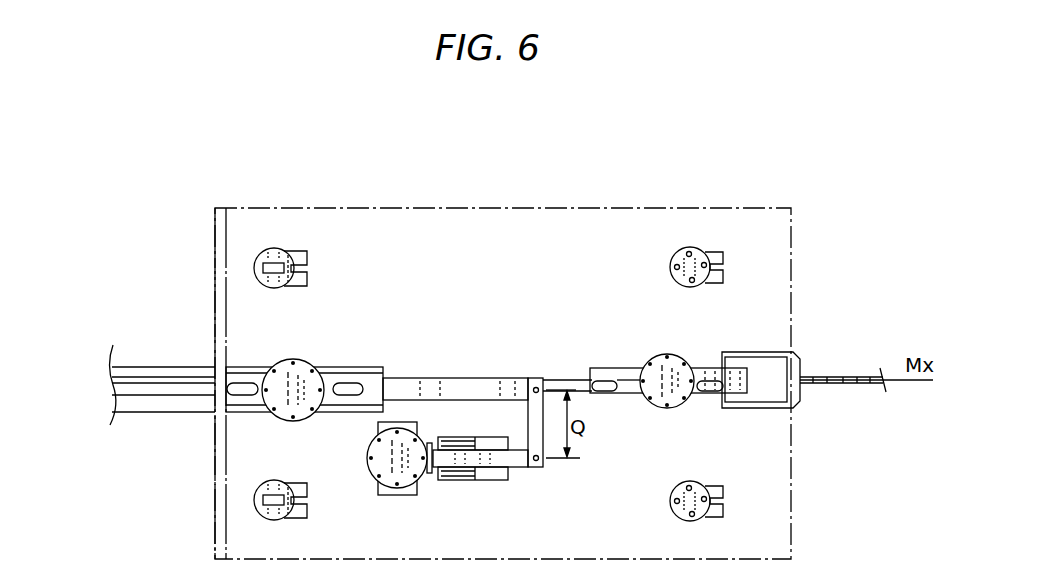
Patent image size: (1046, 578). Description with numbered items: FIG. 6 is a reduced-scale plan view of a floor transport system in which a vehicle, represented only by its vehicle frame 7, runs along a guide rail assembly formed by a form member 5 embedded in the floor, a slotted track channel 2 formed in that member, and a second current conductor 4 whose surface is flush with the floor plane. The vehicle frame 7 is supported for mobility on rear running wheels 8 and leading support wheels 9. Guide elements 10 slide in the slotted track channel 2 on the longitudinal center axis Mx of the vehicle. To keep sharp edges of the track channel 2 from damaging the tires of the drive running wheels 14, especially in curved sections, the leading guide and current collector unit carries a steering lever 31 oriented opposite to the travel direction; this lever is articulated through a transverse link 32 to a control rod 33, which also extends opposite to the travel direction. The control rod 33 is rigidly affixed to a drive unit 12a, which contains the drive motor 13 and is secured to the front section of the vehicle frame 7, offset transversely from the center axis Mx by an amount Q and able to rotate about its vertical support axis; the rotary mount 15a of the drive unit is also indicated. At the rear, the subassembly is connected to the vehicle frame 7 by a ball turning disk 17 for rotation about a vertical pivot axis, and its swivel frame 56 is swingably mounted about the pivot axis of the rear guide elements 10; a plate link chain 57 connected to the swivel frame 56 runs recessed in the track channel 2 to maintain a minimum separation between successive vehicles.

The vehicle frame 7 is at (566, 204).
The leading support wheels 9 is at (308, 259).
The rear running wheels 8 is at (725, 278).
The second current conductor 4 is at (113, 382).
The slotted track channel 2 is at (320, 396).
The form member 5 is at (176, 406).
The guide elements 10 is at (238, 388).
The drive unit 12a is at (362, 443).
The running wheels 14 is at (398, 424).
The rotary disk 15a is at (391, 492).
The drive motor 13 is at (490, 479).
The steering lever 31 is at (490, 386).
The transverse link 32 is at (524, 430).
The control rod 33 is at (522, 468).
The ball turning disk 17 is at (683, 404).
The swivel frame 56 is at (752, 354).
The plate link chain 57 is at (846, 374).